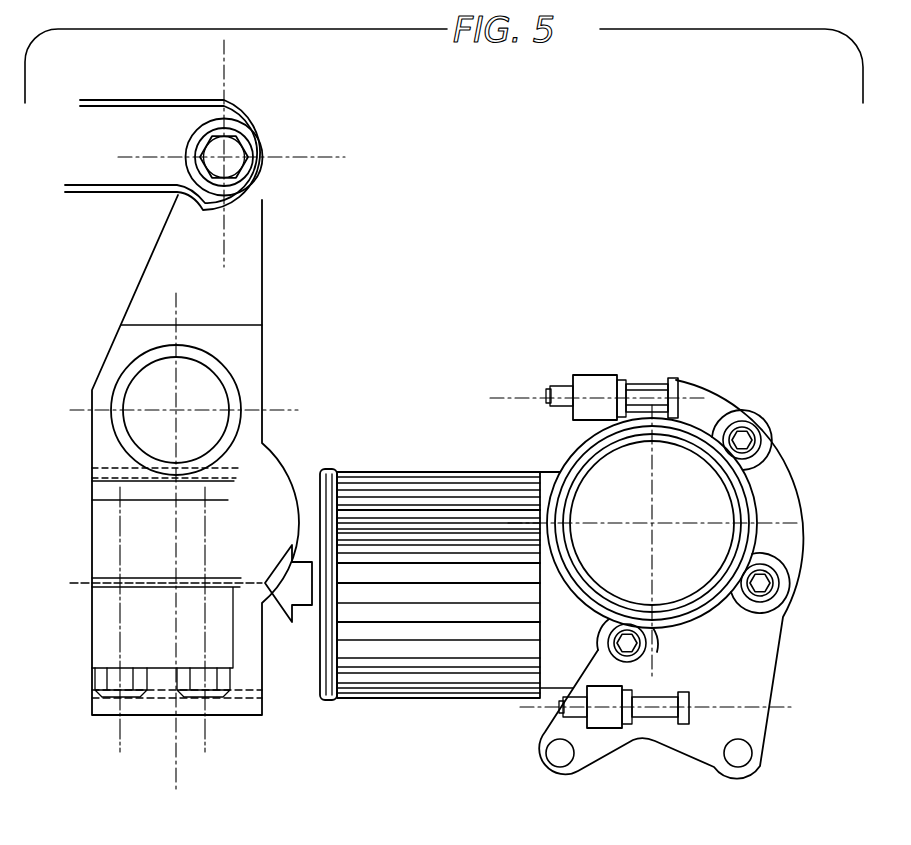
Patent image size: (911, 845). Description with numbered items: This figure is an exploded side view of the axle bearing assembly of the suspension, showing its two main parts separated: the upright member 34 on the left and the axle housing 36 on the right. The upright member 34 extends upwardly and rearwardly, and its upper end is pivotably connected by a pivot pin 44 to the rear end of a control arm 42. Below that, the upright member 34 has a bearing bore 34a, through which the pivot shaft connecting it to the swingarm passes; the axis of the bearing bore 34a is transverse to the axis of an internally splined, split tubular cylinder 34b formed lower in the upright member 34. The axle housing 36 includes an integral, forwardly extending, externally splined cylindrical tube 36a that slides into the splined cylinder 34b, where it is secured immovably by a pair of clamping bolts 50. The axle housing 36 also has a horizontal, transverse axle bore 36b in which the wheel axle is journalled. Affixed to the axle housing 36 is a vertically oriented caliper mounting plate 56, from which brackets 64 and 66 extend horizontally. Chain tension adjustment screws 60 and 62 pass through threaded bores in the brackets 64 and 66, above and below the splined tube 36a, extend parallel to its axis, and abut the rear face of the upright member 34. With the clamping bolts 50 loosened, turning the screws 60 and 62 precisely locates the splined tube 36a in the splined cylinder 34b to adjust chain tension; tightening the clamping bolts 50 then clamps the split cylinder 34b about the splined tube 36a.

The upright member 34 is at (145, 275).
The bearing bore 34a is at (228, 390).
The split tubular cylinder 34b is at (107, 541).
The axle housing 36 is at (697, 433).
The splined cylindrical tube 36a is at (446, 472).
The axle bore 36b is at (737, 512).
The control arm 42 is at (143, 100).
The pivot pin 44 is at (250, 149).
The clamping bolts 50 is at (110, 694).
The caliper mounting plate 56 is at (750, 650).
The chain tension adjustment screw 60 is at (660, 385).
The chain tension adjustment screw 62 is at (662, 712).
The bracket 64 is at (590, 378).
The bracket 66 is at (604, 724).